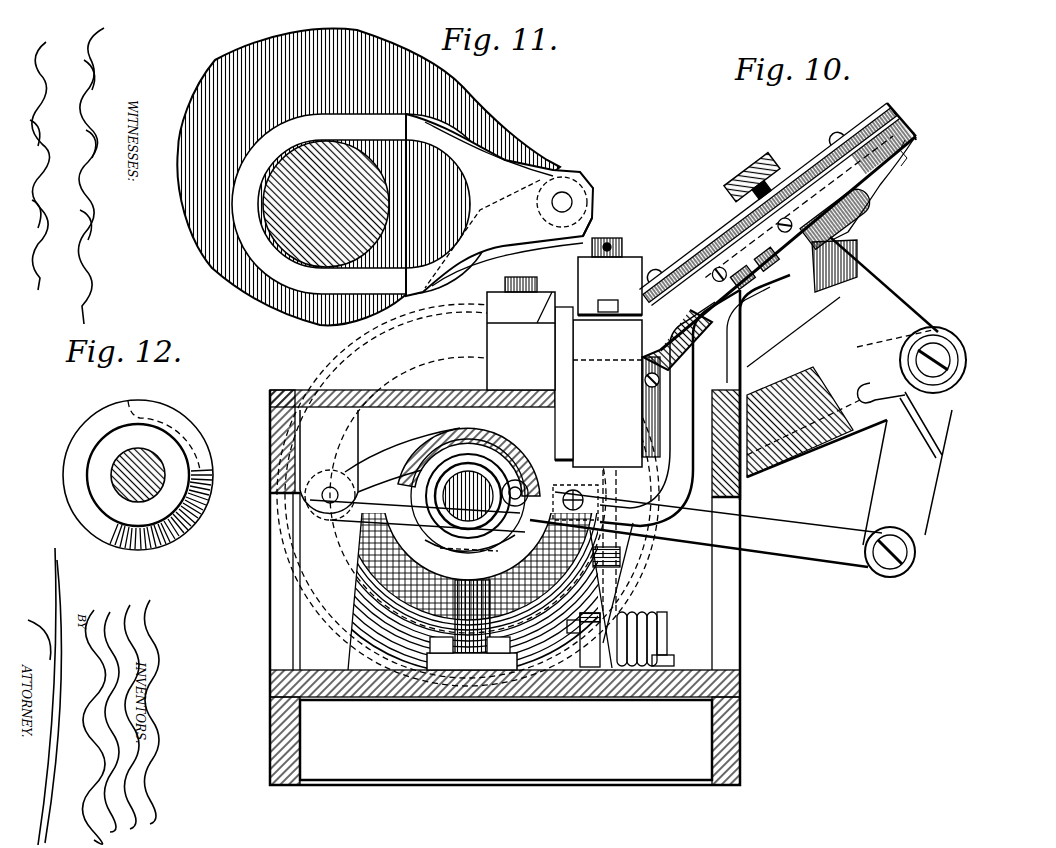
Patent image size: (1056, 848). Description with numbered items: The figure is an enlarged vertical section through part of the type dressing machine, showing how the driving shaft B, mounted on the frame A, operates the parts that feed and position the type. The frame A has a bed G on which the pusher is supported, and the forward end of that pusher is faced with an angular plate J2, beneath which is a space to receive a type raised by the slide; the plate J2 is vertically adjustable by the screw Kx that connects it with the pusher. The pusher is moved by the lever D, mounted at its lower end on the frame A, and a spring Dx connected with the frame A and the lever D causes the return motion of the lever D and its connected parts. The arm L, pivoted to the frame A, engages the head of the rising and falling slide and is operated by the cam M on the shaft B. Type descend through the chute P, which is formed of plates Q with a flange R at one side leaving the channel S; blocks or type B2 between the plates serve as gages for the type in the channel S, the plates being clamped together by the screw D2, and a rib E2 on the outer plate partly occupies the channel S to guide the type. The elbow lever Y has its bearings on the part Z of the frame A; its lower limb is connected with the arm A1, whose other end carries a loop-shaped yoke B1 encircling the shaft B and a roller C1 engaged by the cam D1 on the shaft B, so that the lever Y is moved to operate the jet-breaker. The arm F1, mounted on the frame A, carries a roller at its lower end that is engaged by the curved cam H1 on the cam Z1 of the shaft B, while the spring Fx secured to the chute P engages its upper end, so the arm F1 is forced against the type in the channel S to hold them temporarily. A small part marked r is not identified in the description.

In FIG. 10, the frame A is at (742, 622).
In FIG. 11, the arm A1 is at (594, 200).
In FIG. 10, the arm A1 is at (810, 536).
In FIG. 11, the driving shaft B is at (295, 247).
In FIG. 12, the driving shaft B is at (112, 473).
In FIG. 10, the driving shaft B is at (445, 497).
In FIG. 11, the loop-shaped yoke B1 is at (245, 224).
In FIG. 10, the gage blocks B2 is at (494, 532).
In FIG. 11, the roller C1 is at (566, 180).
In FIG. 10, the roller C1 is at (648, 546).
In FIG. 10, the lever D is at (630, 612).
In FIG. 11, the cam D1 is at (495, 134).
In FIG. 10, the cam D1 is at (474, 532).
In FIG. 10, the screw D2 is at (752, 166).
In FIG. 10, the spring Dx is at (629, 639).
In FIG. 10, the rib E2 is at (962, 358).
In FIG. 10, the arm F1 is at (728, 336).
In FIG. 10, the spring Fx is at (873, 198).
In FIG. 10, the bed G is at (468, 484).
In FIG. 12, the curved cam H1 is at (178, 437).
In FIG. 10, the curved cam H1 is at (535, 450).
In FIG. 10, the angular plate J2 is at (573, 362).
In FIG. 10, the screw Kx is at (624, 252).
In FIG. 10, the arm L is at (402, 448).
In FIG. 10, the cam M is at (360, 470).
In FIG. 10, the chute P is at (778, 235).
In FIG. 10, the plates Q is at (838, 120).
In FIG. 10, the flange R is at (915, 138).
In FIG. 10, the channel S is at (882, 133).
In FIG. 10, the elbow lever Y is at (892, 310).
In FIG. 10, the part of frame Z is at (452, 514).
In FIG. 12, the cam Z1 is at (75, 500).
In FIG. 10, the pivot r is at (598, 480).